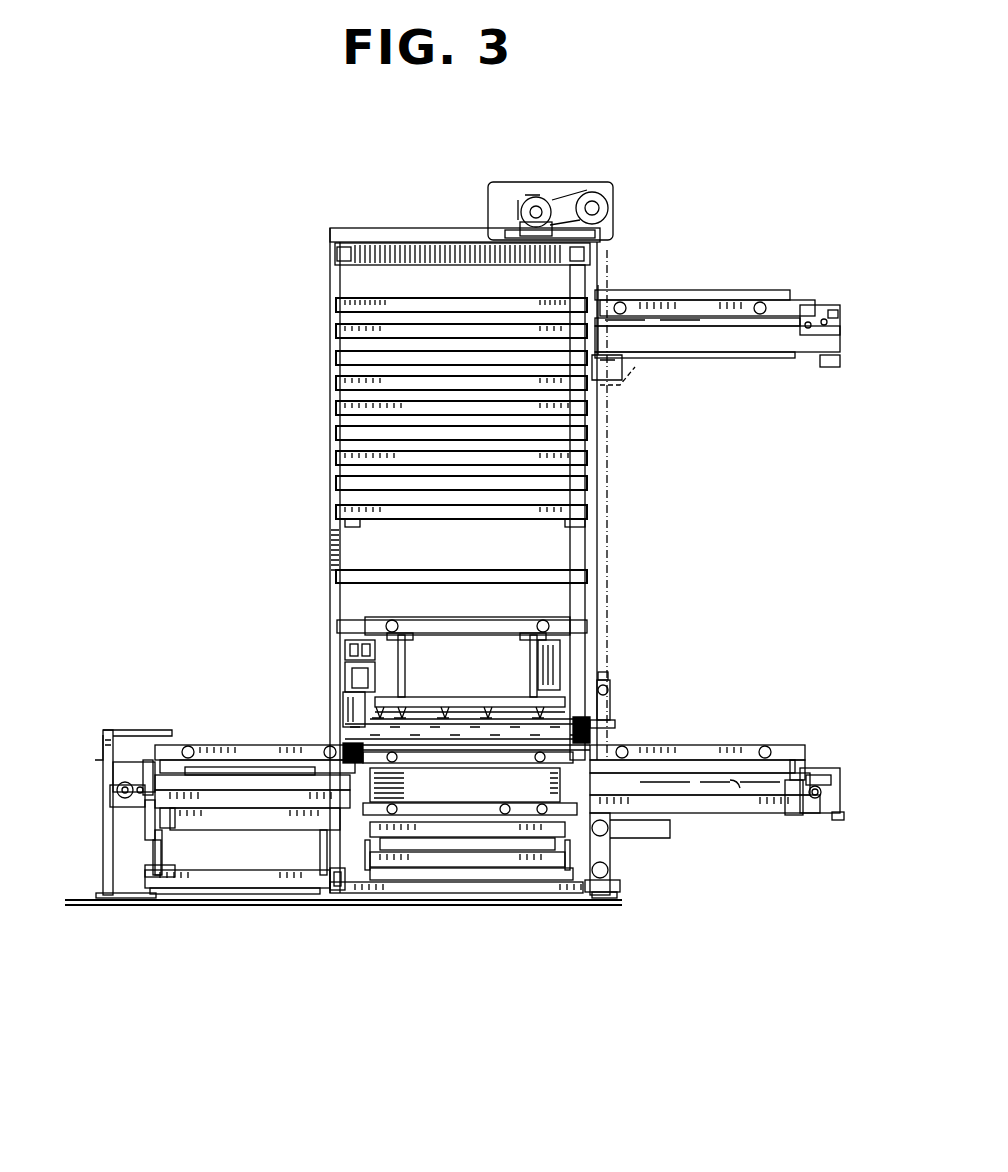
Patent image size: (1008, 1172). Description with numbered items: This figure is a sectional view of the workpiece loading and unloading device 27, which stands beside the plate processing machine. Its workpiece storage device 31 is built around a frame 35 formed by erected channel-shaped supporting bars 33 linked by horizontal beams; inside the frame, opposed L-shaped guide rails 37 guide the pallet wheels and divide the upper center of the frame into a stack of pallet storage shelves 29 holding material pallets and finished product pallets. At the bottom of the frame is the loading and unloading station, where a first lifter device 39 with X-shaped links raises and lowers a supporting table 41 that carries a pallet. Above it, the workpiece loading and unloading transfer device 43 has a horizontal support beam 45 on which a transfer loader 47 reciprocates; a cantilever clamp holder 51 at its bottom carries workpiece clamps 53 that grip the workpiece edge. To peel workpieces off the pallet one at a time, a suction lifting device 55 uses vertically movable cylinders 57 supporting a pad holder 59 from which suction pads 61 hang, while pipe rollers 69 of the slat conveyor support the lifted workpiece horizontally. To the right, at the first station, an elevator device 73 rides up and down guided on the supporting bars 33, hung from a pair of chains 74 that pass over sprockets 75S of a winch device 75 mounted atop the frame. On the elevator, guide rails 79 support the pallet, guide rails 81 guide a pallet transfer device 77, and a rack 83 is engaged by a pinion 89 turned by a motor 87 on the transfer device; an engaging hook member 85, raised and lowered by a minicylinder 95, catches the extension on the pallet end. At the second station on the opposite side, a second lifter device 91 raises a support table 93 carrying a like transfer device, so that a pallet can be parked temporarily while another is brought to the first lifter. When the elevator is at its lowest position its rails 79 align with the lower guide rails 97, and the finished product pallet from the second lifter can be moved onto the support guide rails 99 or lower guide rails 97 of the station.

The workpiece loading and unloading device 27 is at (312, 430).
The pallet storage shelves 29 is at (340, 395).
The workpiece storage device 31 is at (326, 323).
The supporting bars 33 is at (585, 499).
The frame 35 is at (330, 556).
The guide rails 37 is at (467, 346).
The first lifter device 39 is at (517, 872).
The supporting table 41 is at (491, 848).
The workpiece loading and unloading transfer device 43 is at (345, 663).
The support beam 45 is at (345, 646).
The transfer loader 47 is at (350, 694).
The clamp holder 51 is at (350, 728).
The workpiece clamps 53 is at (388, 750).
The suction lifting device 55 is at (563, 674).
The cylinders 57 is at (400, 658).
The pad holder 59 is at (405, 701).
The suction pads 61 is at (458, 713).
The pipe rollers 69 is at (466, 747).
The elevator device 73 is at (727, 354).
The chains 74 is at (608, 268).
The winch device 75 is at (567, 186).
The sprockets 75S is at (620, 198).
The pallet transfer device 77 is at (117, 741).
The guide rails 79 is at (290, 796).
The guide rails 81 is at (170, 738).
The rack 83 is at (248, 791).
The engaging hook member 85 is at (140, 750).
The motor 87 is at (118, 793).
The pinion 89 is at (123, 818).
The second lifter device 91 is at (213, 883).
The support table 93 is at (158, 842).
The minicylinder 95 is at (205, 786).
The lower guide rails 97 is at (340, 874).
The support guide rails 99 is at (596, 720).